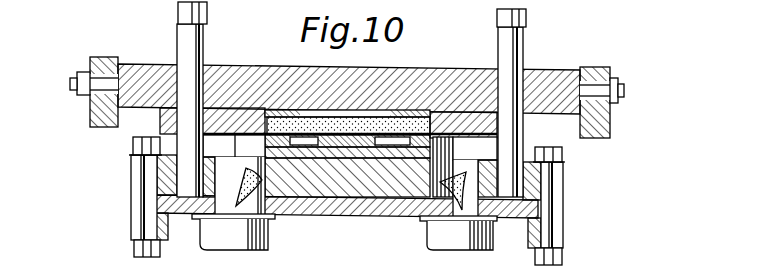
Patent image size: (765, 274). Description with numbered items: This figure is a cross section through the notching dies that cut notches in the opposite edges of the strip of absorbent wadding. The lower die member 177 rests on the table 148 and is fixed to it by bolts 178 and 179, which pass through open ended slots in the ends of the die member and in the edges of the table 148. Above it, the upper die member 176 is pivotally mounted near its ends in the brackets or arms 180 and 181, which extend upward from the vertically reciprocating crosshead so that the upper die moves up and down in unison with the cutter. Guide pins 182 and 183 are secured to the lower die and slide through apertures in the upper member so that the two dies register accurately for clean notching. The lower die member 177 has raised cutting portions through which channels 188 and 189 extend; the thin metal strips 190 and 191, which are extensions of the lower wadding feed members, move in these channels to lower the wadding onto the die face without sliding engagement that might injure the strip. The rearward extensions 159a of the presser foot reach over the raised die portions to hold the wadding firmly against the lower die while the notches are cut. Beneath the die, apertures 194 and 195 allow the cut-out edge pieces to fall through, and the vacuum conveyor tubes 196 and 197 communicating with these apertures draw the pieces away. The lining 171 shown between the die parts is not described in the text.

The table 148 is at (347, 208).
The rearward extensions of presser foot 159a is at (451, 57).
The lining 171 is at (349, 125).
The upper die member 176 is at (218, 118).
The lower die member 177 is at (347, 202).
The bolt 178 is at (140, 144).
The bolt 179 is at (550, 183).
The bracket 180 is at (101, 113).
The bracket 181 is at (610, 124).
The guide pin 182 is at (186, 43).
The guide pin 183 is at (525, 45).
The channel 188 is at (285, 217).
The channel 189 is at (393, 145).
The metal strip 190 is at (297, 134).
The metal strip 191 is at (423, 117).
The aperture 194 is at (221, 170).
The aperture 195 is at (473, 173).
The vacuum conveyor tube 196 is at (237, 240).
The vacuum conveyor tube 197 is at (448, 240).